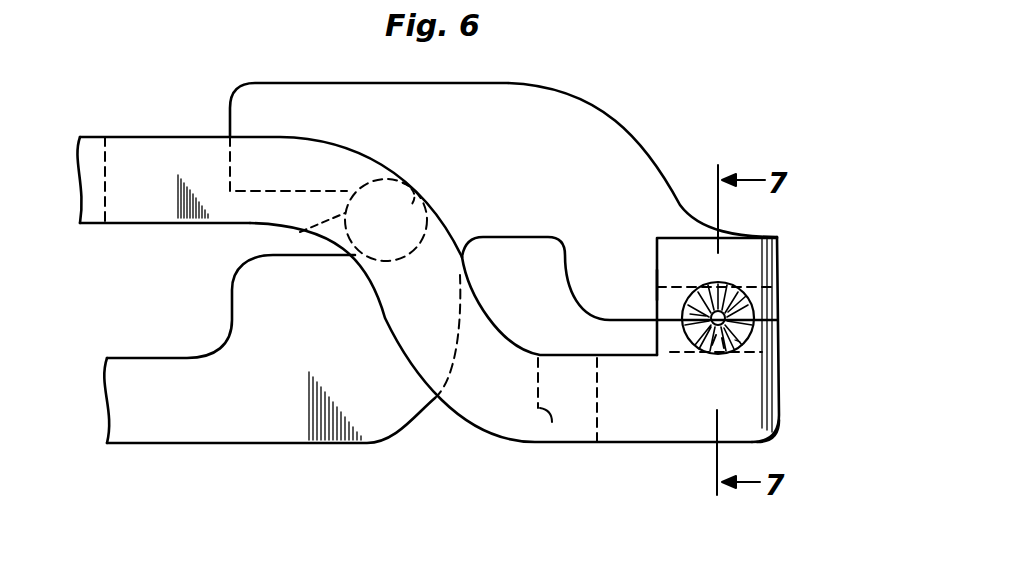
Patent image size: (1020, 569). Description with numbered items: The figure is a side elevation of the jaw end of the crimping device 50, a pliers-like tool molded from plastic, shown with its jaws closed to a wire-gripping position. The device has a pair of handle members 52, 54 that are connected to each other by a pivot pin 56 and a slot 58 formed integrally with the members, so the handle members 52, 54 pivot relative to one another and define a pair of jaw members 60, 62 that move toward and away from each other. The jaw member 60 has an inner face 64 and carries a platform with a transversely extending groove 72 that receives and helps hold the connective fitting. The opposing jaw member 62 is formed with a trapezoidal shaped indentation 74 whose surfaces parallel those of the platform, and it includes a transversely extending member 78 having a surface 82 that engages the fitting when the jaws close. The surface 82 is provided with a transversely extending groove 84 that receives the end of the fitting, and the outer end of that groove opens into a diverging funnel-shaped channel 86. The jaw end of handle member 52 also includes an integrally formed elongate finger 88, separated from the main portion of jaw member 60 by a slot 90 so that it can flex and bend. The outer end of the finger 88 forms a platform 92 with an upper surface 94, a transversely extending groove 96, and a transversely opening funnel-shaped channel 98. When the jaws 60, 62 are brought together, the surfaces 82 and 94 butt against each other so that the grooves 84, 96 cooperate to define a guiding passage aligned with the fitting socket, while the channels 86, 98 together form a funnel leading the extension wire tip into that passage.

The crimping device 50 is at (690, 128).
The handle member 52 is at (92, 148).
The handle member 54 is at (168, 430).
The pivot pin 56 is at (300, 232).
The slot 58 is at (405, 185).
The jaw member 60 is at (782, 431).
The jaw member 62 is at (786, 245).
The inner face 64 is at (668, 352).
The transversely extending groove 72 is at (724, 348).
The trapezoidal shaped indentation 74 is at (655, 290).
The transversely extending member 78 is at (780, 268).
The surface 82 is at (762, 328).
The transversely extending groove 84 is at (690, 314).
The funnel-shaped channel 86 is at (745, 305).
The elongate finger 88 is at (616, 432).
The slot 90 is at (552, 422).
The platform 92 is at (778, 380).
The upper surface 94 is at (700, 316).
The transversely extending groove 96 is at (712, 345).
The funnel-shaped channel 98 is at (740, 342).